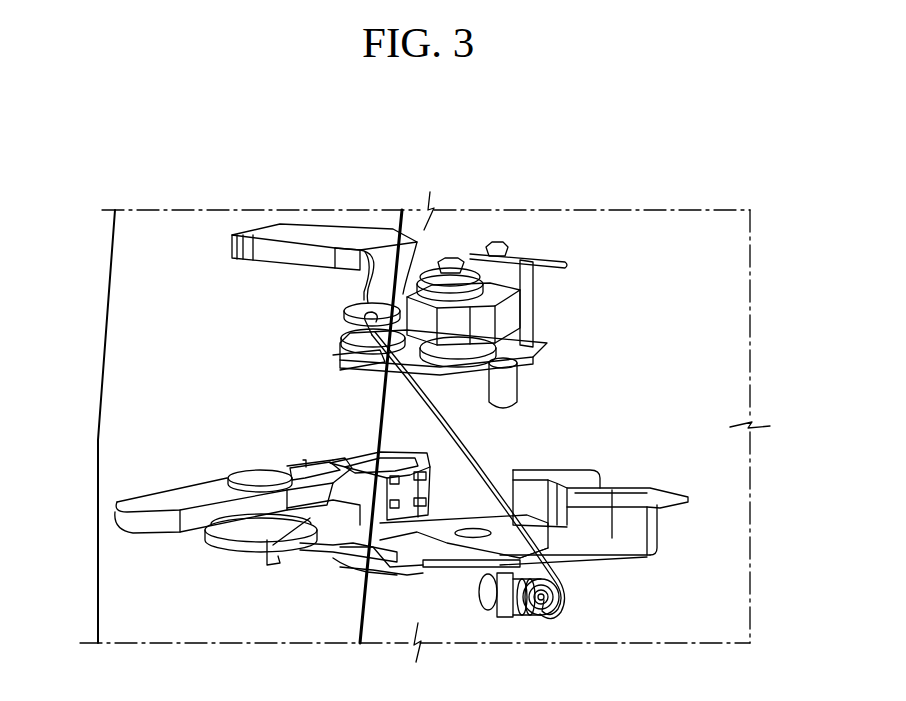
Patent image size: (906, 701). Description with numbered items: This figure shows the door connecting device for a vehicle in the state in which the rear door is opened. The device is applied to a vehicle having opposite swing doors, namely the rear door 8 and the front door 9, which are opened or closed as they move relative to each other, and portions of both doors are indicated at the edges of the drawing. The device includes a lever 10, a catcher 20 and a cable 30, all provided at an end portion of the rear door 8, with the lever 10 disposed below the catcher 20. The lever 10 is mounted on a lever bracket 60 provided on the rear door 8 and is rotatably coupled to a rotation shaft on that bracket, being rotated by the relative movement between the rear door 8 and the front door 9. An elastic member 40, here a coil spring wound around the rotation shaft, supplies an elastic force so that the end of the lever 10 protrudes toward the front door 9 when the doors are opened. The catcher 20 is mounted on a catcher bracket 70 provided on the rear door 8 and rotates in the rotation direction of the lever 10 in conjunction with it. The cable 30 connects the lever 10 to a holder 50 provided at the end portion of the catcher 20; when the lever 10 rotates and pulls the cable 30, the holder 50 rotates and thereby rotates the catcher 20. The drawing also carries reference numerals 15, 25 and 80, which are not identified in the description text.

The rear door 8 is at (636, 240).
The front door 9 is at (145, 277).
The lever 10 is at (160, 527).
The pivot shaft 15 is at (257, 475).
The catcher 20 is at (313, 235).
The pivot bolt 25 is at (452, 262).
The cable 30 is at (472, 447).
The elastic member 40 is at (300, 517).
The holder 50 is at (348, 340).
The lever bracket 60 is at (597, 550).
The catcher bracket 70 is at (540, 371).
The spring arm 80 is at (540, 278).